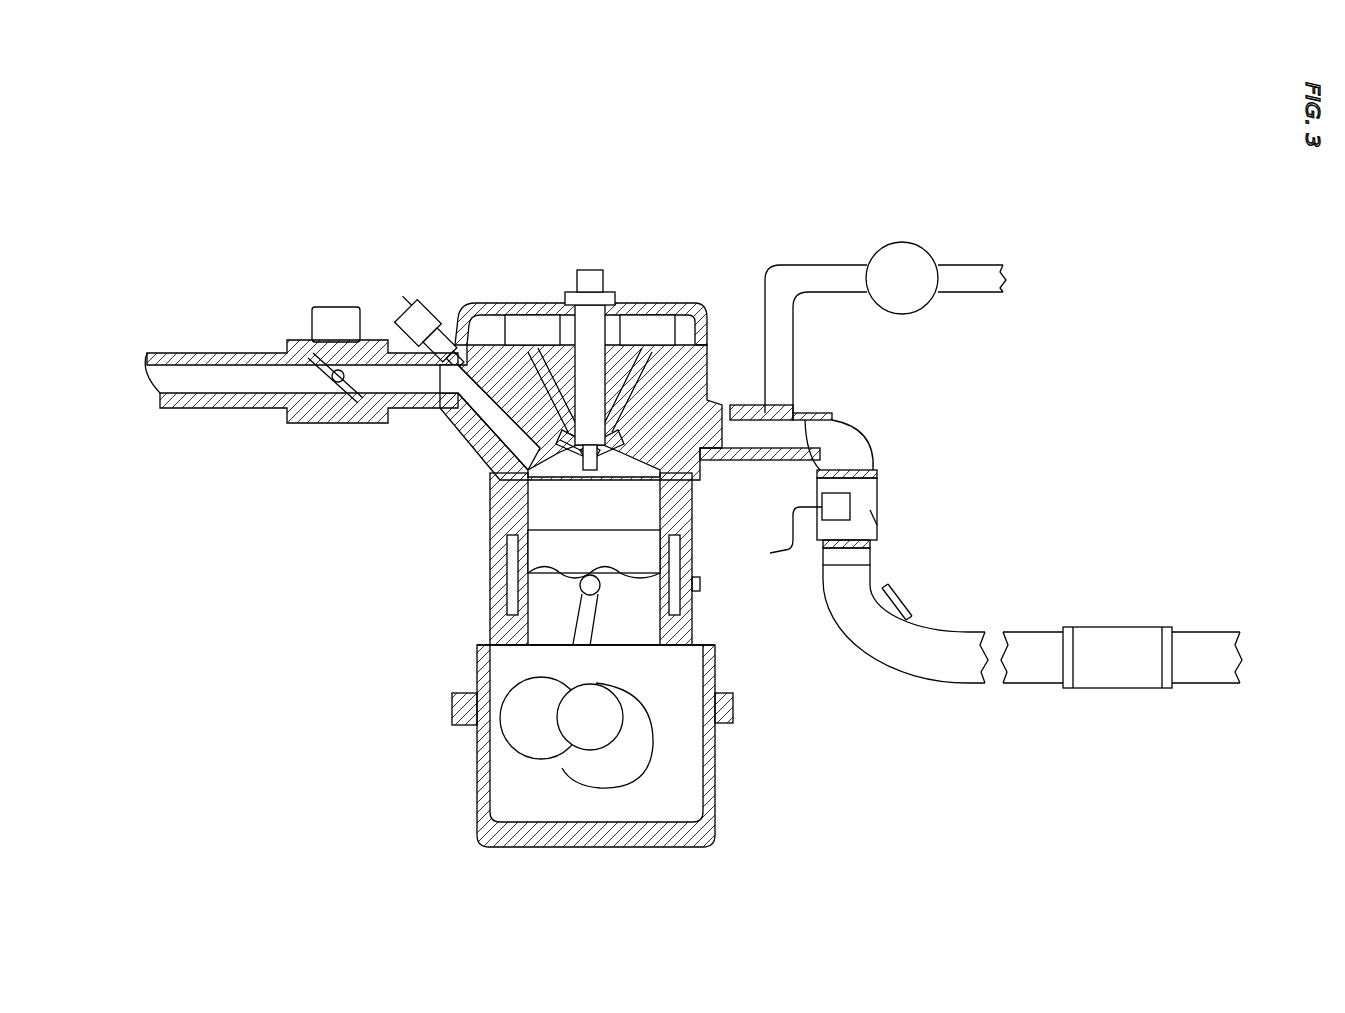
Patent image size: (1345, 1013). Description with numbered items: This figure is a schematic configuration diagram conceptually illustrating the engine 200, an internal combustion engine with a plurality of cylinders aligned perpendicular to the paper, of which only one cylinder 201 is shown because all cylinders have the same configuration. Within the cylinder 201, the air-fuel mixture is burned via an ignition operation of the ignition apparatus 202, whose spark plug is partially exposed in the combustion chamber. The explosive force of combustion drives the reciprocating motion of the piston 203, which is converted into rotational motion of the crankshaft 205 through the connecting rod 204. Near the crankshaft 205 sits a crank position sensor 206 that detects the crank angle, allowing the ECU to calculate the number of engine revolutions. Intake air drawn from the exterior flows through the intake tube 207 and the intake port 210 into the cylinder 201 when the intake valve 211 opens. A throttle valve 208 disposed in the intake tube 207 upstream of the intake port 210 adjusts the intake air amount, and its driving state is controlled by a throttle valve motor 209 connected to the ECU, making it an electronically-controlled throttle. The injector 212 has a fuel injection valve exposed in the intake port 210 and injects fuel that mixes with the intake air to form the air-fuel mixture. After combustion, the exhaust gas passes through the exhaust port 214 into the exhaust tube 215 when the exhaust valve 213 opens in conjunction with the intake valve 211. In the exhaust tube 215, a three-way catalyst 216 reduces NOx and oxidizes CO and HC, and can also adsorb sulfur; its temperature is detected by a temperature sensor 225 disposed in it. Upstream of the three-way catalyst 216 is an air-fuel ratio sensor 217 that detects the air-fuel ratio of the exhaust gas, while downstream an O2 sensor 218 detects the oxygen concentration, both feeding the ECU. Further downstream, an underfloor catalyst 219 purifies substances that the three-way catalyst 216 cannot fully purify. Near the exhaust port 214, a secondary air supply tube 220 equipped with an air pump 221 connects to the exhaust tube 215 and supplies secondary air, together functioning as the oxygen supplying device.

The engine 200 is at (955, 135).
The cylinder 201 is at (490, 627).
The ignition apparatus 202 is at (598, 268).
The piston 203 is at (500, 570).
The connecting rod 204 is at (460, 690).
The crankshaft 205 is at (603, 725).
The crank position sensor 206 is at (515, 770).
The intake tube 207 is at (240, 388).
The throttle valve 208 is at (312, 408).
The throttle valve motor 209 is at (312, 307).
The intake port 210 is at (498, 420).
The intake valve 211 is at (470, 438).
The injector 212 is at (408, 300).
The exhaust valve 213 is at (700, 470).
The exhaust port 214 is at (735, 430).
The exhaust tube 215 is at (950, 633).
The three-way catalyst 216 is at (880, 503).
The air-fuel ratio sensor 217 is at (853, 418).
The O2 sensor 218 is at (905, 600).
The underfloor catalyst 219 is at (1098, 660).
The secondary air supply tube 220 is at (820, 278).
The air pump 221 is at (915, 242).
The temperature sensor 225 is at (776, 538).